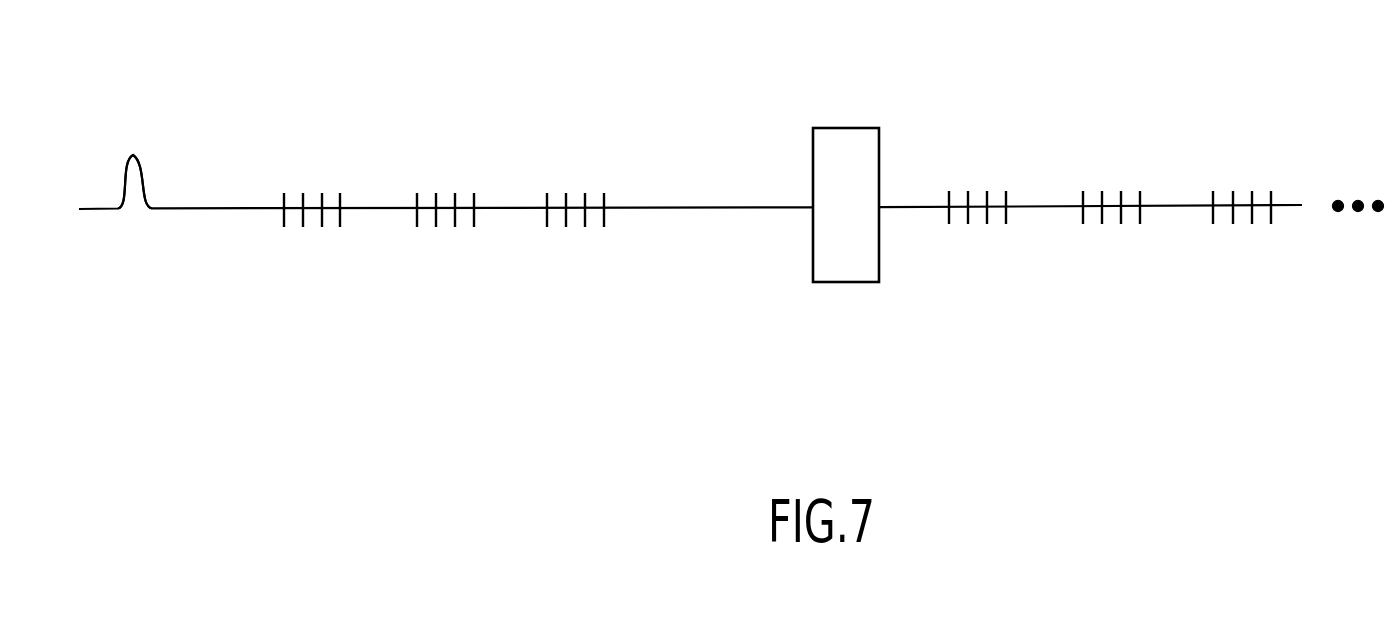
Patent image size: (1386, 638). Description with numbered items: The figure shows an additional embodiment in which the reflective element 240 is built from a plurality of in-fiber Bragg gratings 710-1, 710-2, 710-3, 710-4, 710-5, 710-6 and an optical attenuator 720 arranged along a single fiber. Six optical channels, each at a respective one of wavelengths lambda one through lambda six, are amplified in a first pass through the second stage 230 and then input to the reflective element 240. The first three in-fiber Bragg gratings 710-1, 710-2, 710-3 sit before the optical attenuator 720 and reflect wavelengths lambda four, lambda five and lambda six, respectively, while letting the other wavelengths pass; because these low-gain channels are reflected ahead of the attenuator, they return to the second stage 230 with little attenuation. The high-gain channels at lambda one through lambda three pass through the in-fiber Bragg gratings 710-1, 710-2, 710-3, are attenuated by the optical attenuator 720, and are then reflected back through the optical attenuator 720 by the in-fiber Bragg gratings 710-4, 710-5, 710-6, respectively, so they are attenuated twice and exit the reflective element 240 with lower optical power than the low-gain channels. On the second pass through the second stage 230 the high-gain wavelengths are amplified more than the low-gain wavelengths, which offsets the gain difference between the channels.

The second stage 230 is at (134, 153).
The reflective element 240 is at (202, 297).
The in-fiber Bragg grating 710-1 is at (307, 183).
The in-fiber Bragg grating 710-2 is at (445, 183).
The in-fiber Bragg grating 710-3 is at (573, 183).
The in-fiber Bragg grating 710-4 is at (975, 181).
The in-fiber Bragg grating 710-5 is at (1113, 181).
The in-fiber Bragg grating 710-6 is at (1243, 181).
The optical attenuator 720 is at (845, 282).